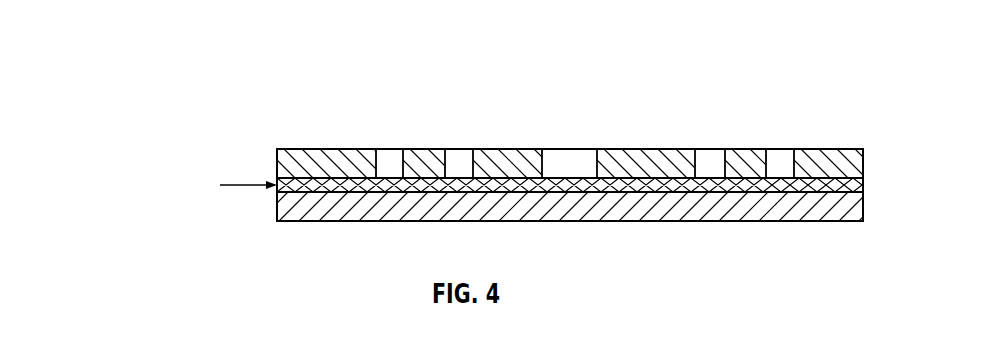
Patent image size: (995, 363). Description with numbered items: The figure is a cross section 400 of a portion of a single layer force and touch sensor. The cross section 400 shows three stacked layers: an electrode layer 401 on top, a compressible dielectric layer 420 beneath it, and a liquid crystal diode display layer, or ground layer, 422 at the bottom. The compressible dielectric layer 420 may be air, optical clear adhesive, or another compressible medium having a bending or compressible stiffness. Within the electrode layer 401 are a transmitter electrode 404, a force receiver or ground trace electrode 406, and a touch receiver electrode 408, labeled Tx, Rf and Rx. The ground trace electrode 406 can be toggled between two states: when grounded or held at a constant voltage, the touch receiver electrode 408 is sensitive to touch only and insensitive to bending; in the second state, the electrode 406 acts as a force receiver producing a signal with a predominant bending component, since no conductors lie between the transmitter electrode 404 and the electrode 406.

The cross section 400 is at (170, 77).
The electrode layer 401 is at (862, 162).
The transmitter electrode 404 is at (290, 149).
The force receiver electrode 406 is at (405, 148).
The touch receiver electrode 408 is at (533, 148).
The compressible dielectric layer 420 is at (863, 185).
The liquid crystal diode display layer 422 is at (863, 205).